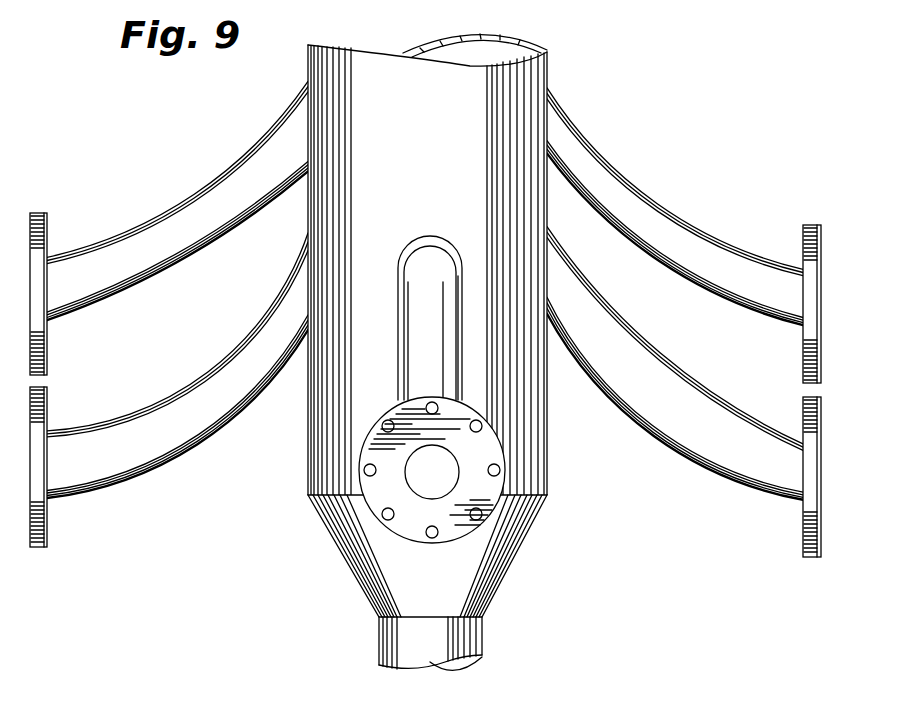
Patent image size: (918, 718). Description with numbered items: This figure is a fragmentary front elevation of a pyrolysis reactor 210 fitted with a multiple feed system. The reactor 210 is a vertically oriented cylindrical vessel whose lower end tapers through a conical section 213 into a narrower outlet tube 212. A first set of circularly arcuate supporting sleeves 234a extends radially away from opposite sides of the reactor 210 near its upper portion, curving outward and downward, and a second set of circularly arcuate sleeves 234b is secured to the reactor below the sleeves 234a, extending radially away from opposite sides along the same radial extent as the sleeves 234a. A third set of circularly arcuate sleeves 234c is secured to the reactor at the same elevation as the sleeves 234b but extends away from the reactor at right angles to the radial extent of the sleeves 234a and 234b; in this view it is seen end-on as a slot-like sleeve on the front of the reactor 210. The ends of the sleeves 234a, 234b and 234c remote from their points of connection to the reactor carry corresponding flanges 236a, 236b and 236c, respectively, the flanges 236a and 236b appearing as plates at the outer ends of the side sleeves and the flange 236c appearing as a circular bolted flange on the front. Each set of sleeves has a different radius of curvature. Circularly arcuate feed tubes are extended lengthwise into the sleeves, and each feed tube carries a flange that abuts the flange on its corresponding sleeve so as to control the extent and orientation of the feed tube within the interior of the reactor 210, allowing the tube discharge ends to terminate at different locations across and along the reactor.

The pyrolysis reactor 210 is at (352, 84).
The bottom outlet tube 212 is at (482, 637).
The conical transition section 213 is at (514, 558).
The first set of circularly arcuate supporting sleeves 234a is at (108, 303).
The second set of circularly arcuate sleeves 234b is at (98, 472).
The third set of circularly arcuate sleeves 234c is at (463, 302).
The flange 236a is at (47, 236).
The flange 236b is at (818, 470).
The flange 236c is at (402, 528).